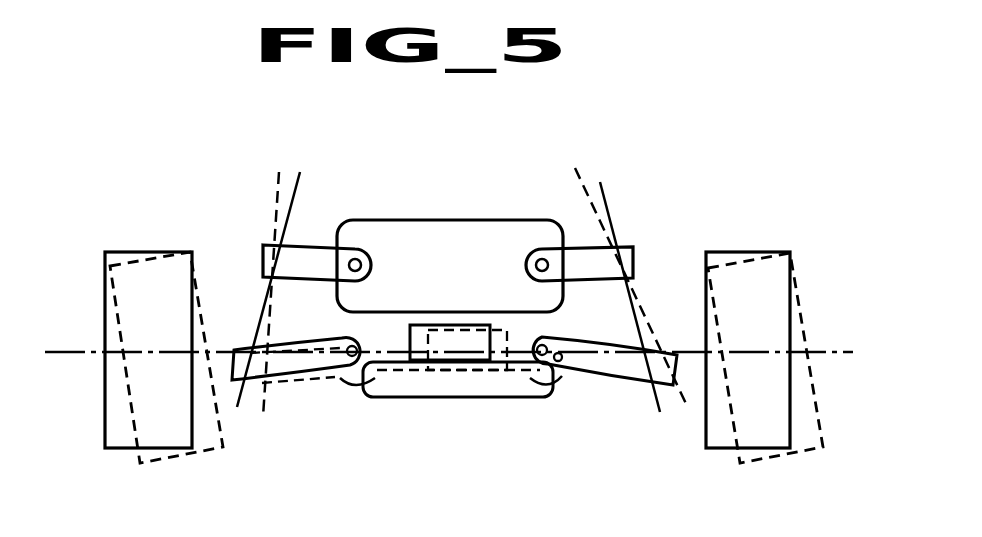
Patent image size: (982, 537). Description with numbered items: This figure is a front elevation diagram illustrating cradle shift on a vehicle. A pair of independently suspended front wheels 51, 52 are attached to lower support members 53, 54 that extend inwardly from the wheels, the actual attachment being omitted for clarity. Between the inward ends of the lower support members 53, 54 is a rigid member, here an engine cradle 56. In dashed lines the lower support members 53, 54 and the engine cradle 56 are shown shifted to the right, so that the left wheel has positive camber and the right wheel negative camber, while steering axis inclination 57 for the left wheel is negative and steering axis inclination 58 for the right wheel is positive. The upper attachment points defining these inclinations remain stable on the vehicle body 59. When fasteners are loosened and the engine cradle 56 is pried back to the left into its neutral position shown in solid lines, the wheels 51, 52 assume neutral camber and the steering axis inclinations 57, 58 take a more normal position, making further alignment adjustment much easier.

The front wheel 51 is at (793, 283).
The front wheel 52 is at (118, 338).
The lower support member 53 is at (637, 375).
The lower support member 54 is at (335, 365).
The engine cradle 56 is at (473, 378).
The steering axis inclination 57 is at (575, 168).
The steering axis inclination 58 is at (300, 172).
The vehicle body 59 is at (437, 236).